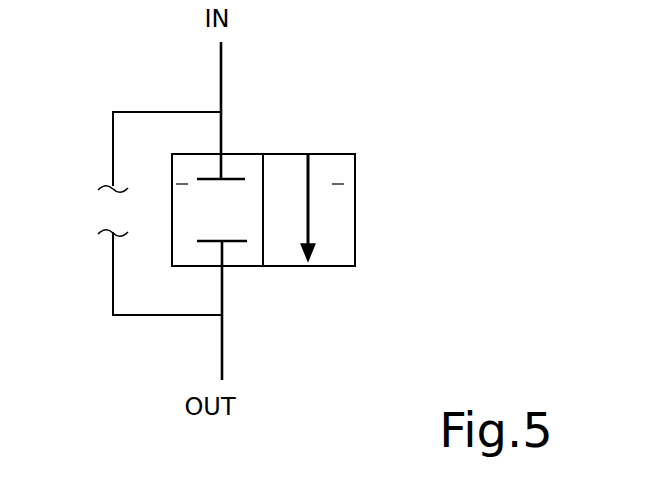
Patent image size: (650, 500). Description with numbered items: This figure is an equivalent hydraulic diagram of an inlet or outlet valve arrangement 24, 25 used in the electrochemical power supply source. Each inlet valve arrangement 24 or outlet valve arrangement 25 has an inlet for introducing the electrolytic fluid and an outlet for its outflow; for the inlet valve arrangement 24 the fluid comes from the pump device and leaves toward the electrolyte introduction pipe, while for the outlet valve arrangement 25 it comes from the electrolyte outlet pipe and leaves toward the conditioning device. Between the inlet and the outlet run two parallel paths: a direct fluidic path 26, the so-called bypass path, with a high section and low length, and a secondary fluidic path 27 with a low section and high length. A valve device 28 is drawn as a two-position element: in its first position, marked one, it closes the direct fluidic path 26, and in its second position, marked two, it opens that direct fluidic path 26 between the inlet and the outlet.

The inlet valve arrangement 24 is at (339, 143).
The outlet valve arrangement 25 is at (318, 103).
The direct fluidic path 26 is at (311, 222).
The secondary fluidic path 27 is at (112, 160).
The valve device 28 is at (267, 273).